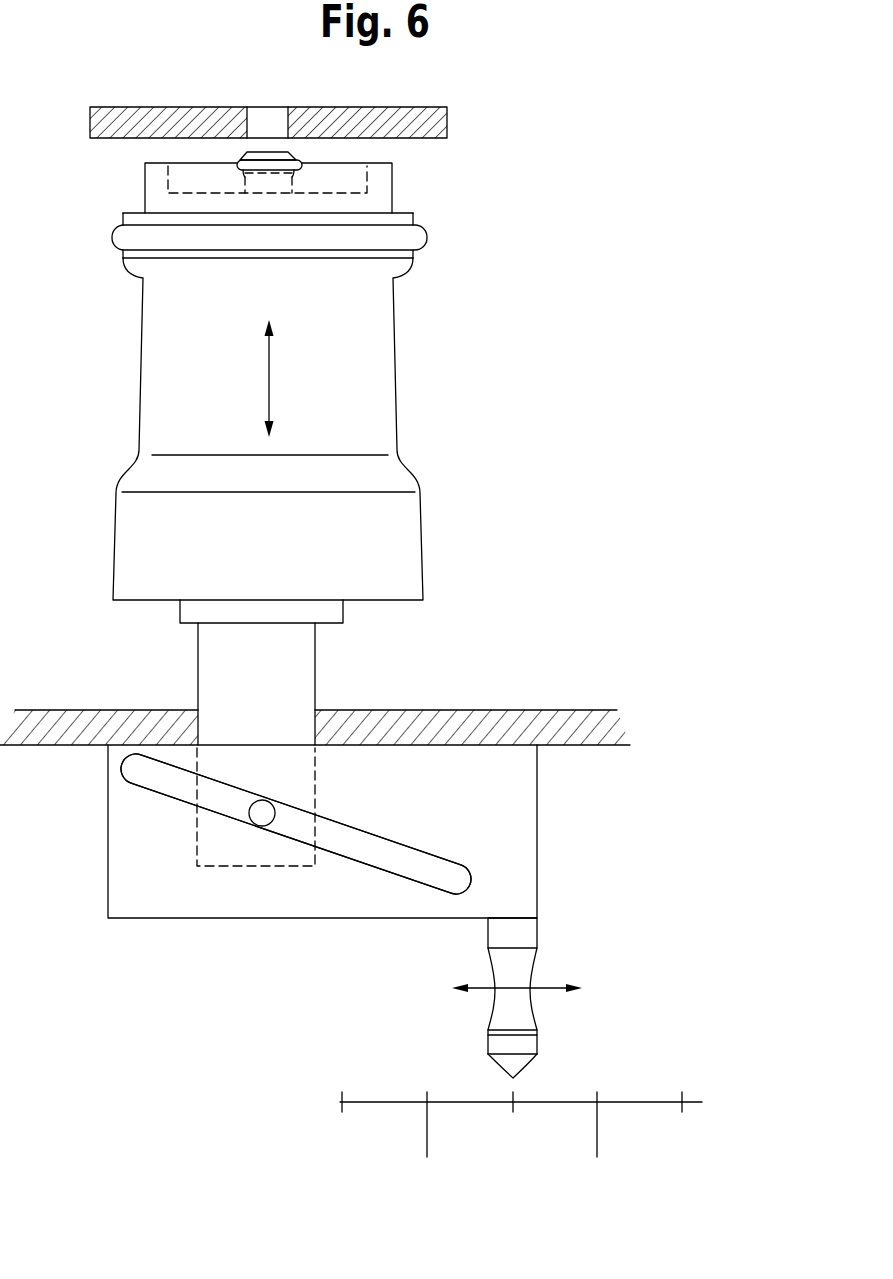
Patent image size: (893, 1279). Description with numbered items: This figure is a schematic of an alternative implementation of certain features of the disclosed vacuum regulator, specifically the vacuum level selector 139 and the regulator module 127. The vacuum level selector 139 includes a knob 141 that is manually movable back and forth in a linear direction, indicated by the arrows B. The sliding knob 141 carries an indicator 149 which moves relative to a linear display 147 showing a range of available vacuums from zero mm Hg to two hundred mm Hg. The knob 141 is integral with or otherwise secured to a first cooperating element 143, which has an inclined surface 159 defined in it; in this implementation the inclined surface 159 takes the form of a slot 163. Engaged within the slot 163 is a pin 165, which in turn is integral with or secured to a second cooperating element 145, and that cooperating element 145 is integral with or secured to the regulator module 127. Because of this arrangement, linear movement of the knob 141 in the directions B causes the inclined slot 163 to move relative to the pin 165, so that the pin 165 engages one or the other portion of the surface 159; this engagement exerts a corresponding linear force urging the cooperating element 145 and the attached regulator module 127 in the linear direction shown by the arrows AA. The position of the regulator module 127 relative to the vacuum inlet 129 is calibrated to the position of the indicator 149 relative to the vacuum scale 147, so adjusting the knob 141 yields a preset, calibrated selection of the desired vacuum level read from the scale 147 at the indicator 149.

The vacuum inlet 129 is at (252, 117).
The regulator module 127 is at (424, 422).
The second cooperating element 145 is at (307, 670).
The first cooperating element 143 is at (537, 837).
The inclined surface 159 is at (415, 853).
The slot 163 is at (345, 845).
The pin 165 is at (261, 821).
The vacuum level selector 139 is at (530, 1055).
The knob 141 is at (532, 968).
The indicator 149 is at (537, 1045).
The linear display 147 is at (697, 1092).